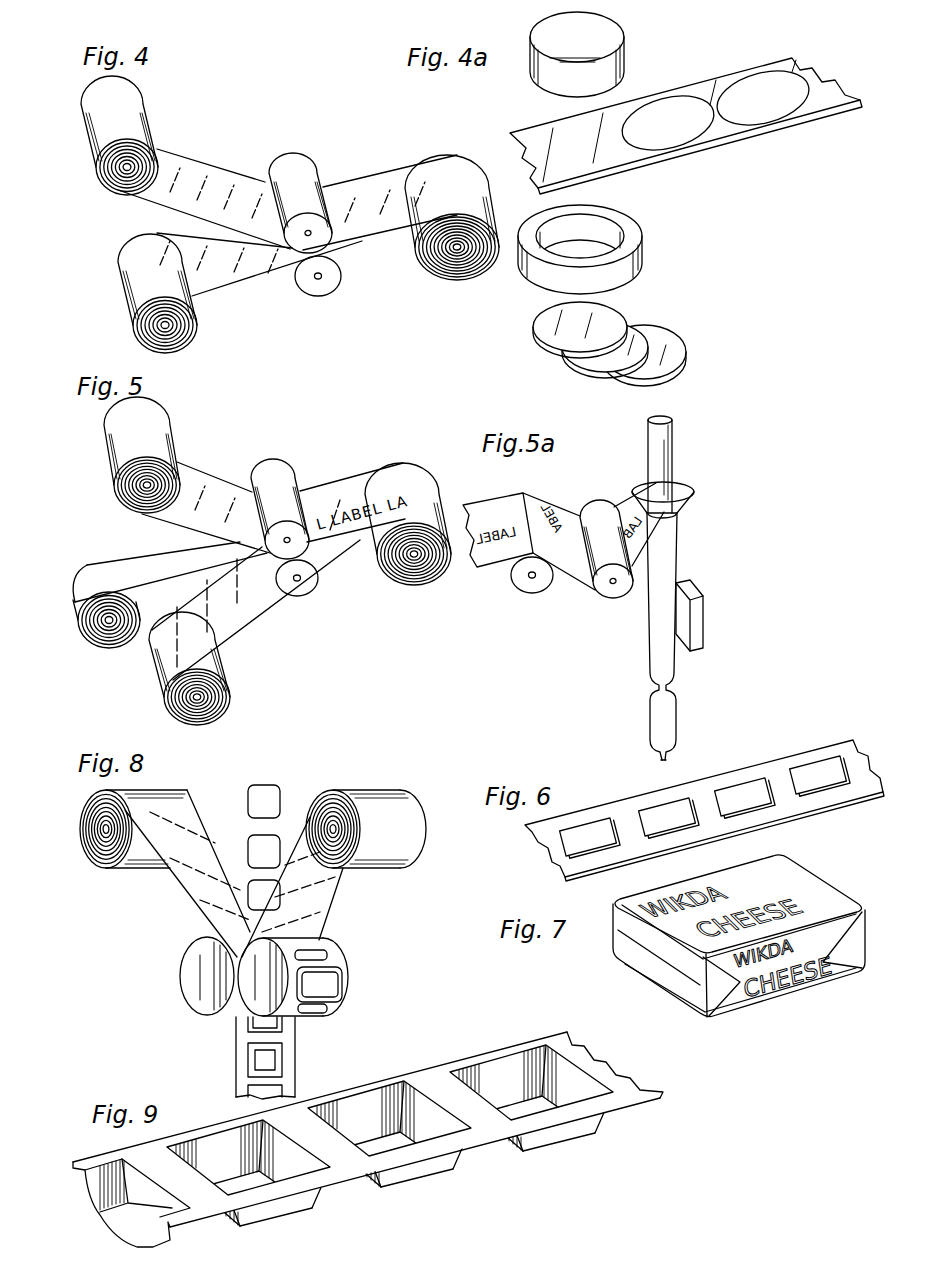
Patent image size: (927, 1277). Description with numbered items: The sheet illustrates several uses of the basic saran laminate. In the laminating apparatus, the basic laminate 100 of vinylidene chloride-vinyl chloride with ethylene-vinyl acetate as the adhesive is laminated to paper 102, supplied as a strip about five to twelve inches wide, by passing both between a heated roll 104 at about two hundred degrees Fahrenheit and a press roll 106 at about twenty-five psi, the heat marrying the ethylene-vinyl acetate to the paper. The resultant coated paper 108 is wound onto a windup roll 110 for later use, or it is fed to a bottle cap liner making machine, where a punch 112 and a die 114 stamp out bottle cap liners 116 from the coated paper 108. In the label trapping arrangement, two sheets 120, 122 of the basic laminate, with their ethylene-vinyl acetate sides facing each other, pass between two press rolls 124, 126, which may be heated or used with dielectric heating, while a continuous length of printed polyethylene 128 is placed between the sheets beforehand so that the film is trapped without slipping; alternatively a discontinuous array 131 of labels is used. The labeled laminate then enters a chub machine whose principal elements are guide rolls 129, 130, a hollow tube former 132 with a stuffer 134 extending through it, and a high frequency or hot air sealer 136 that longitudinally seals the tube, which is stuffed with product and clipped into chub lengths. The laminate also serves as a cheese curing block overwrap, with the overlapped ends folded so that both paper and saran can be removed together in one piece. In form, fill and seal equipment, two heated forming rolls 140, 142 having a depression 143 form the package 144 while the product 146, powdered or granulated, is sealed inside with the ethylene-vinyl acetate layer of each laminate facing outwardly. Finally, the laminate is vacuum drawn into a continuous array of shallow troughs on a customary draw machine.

In FIG. 4, the basic laminate 100 is at (190, 167).
In FIG. 4, the paper 102 is at (218, 285).
In FIG. 4, the heated roll 104 is at (295, 167).
In FIG. 4, the press roll 106 is at (323, 290).
In FIG. 4, the coated paper 108 is at (375, 166).
In FIG. 4A, the coated paper 108 is at (538, 133).
In FIG. 4, the windup roll 110 is at (453, 276).
In FIG. 4A, the punch 112 is at (616, 68).
In FIG. 4A, the die 114 is at (623, 218).
In FIG. 4A, the bottle cap liners 116 is at (665, 330).
In FIG. 5, the sheet of basic laminate 120 is at (233, 460).
In FIG. 5, the sheet of basic laminate 122 is at (226, 618).
In FIG. 5, the press roll 124 is at (268, 475).
In FIG. 5, the press roll 126 is at (298, 588).
In FIG. 5, the printed polyethylene 128 is at (157, 553).
In FIG. 5A, the guide roll 129 is at (522, 587).
In FIG. 5A, the guide roll 130 is at (600, 490).
In FIG. 6, the discontinuous array of labels 131 is at (647, 813).
In FIG. 5A, the hollow tube former 132 is at (680, 525).
In FIG. 5A, the stuffer 134 is at (673, 458).
In FIG. 5A, the sealer 136 is at (703, 611).
In FIG. 8, the forming roll 140 is at (192, 984).
In FIG. 8, the forming roll 142 is at (345, 975).
In FIG. 8, the depression 143 is at (325, 988).
In FIG. 8, the package 144 is at (268, 1060).
In FIG. 8, the product 146 is at (272, 798).